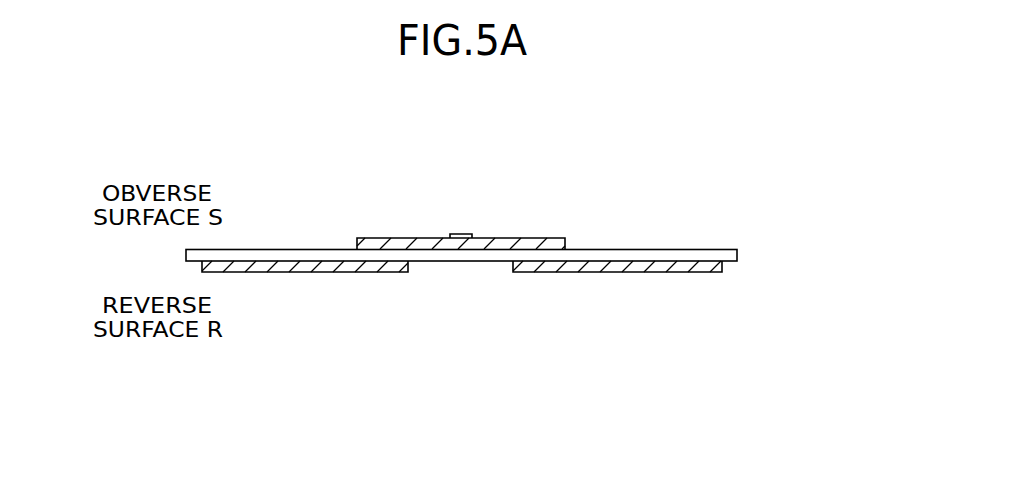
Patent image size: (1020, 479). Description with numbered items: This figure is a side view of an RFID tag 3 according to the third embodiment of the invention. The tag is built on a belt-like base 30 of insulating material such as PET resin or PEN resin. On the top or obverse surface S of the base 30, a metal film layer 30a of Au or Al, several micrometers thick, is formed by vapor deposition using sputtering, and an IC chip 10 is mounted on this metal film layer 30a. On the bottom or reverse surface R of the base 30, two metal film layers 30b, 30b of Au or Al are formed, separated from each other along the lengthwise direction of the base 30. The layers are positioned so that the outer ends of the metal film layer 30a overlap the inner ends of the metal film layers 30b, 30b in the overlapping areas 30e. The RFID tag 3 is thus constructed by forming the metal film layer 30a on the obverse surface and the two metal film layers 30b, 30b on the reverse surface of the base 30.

The RFID tag 3 is at (621, 134).
The IC chip 10 is at (458, 233).
The belt-like base 30 is at (700, 253).
The metal film layer 30a is at (529, 243).
The metal film layers 30b is at (285, 272).
The overlapping areas 30e is at (409, 277).